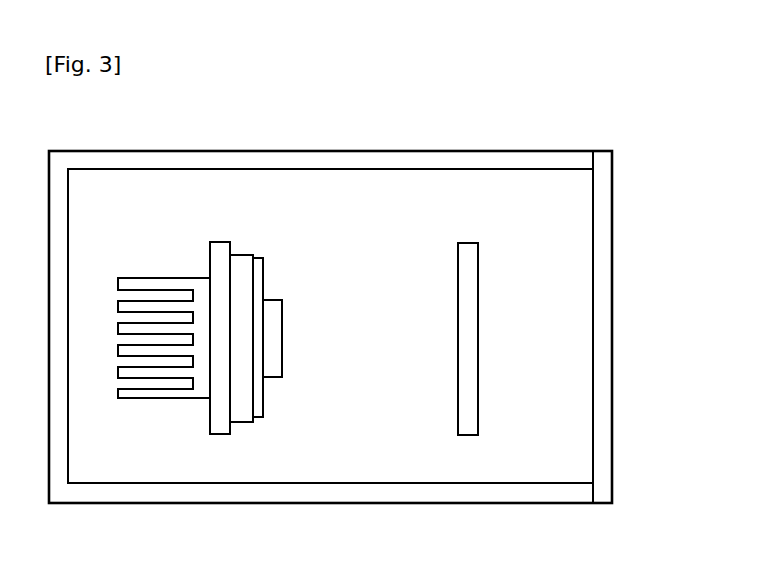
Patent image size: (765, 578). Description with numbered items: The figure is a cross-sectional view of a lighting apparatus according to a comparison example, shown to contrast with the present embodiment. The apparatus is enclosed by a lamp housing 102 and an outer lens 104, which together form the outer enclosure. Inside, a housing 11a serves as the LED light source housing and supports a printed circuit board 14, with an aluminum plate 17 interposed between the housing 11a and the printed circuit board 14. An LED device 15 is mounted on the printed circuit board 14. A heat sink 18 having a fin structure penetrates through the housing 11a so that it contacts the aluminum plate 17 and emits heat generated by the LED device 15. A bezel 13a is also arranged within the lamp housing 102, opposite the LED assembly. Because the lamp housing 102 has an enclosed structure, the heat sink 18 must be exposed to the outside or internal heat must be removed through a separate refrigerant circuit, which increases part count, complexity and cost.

The lamp housing 102 is at (220, 160).
The outer lens 104 is at (612, 324).
The heat sink 18 is at (150, 393).
The housing 11a is at (220, 435).
The aluminum plate 17 is at (239, 422).
The printed circuit board 14 is at (261, 402).
The LED device 15 is at (282, 337).
The bezel 13a is at (478, 379).